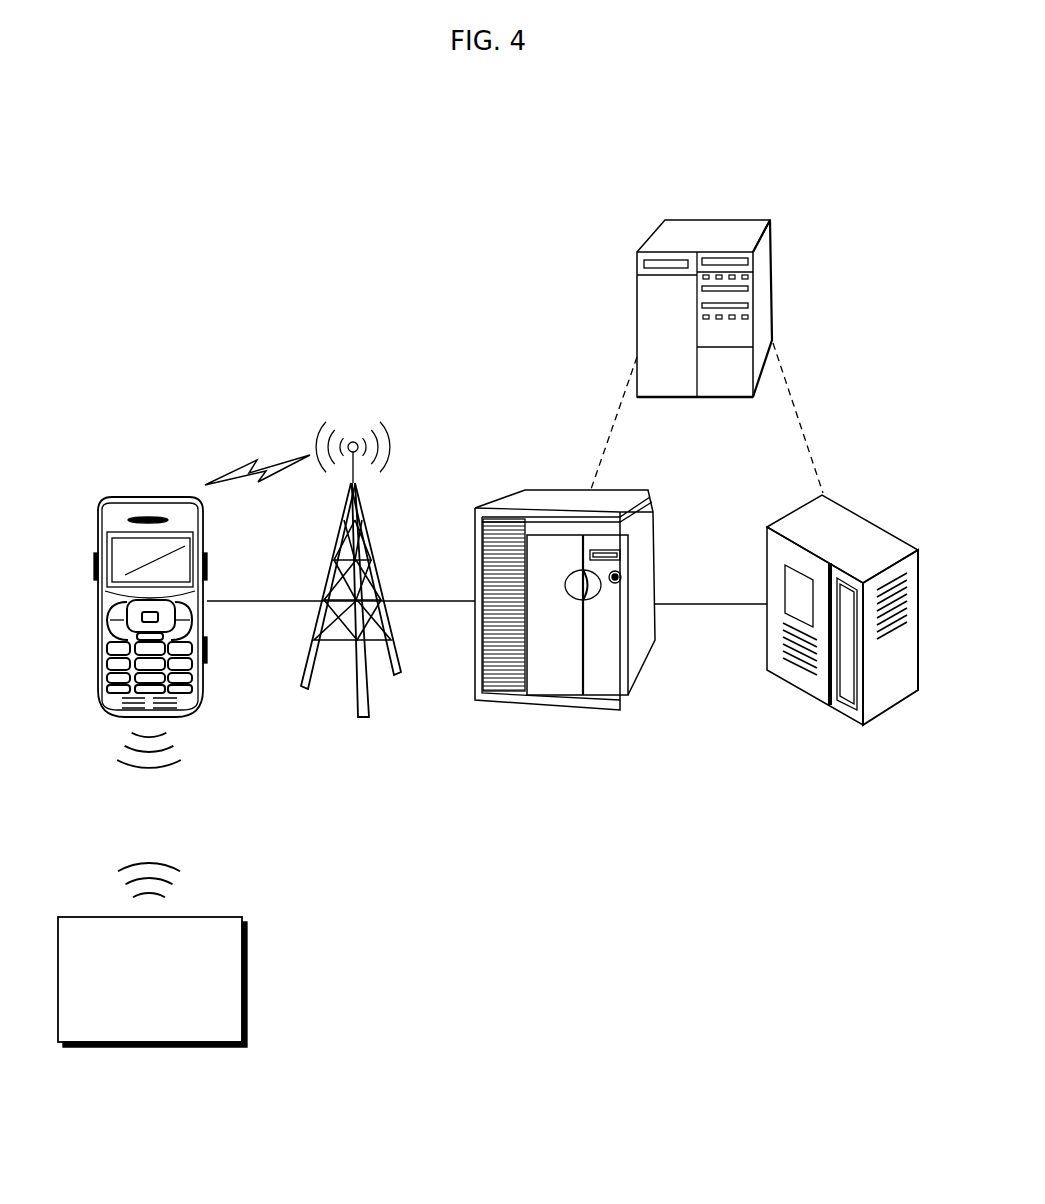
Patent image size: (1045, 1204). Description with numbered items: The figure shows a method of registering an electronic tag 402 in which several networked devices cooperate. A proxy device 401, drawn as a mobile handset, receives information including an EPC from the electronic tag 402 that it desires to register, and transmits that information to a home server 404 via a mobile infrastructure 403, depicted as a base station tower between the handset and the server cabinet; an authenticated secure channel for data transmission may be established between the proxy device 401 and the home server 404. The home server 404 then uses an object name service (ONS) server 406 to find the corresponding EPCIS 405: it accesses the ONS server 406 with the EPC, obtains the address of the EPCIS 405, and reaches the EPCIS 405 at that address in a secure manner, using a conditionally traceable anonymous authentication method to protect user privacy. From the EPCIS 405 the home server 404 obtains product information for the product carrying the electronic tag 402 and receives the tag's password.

The proxy device 401 is at (148, 495).
The electronic tag 402 is at (248, 979).
The mobile infrastructure 403 is at (363, 717).
The home server 404 is at (562, 710).
The EPCIS 405 is at (814, 697).
The object name service (ONS) server 406 is at (716, 220).